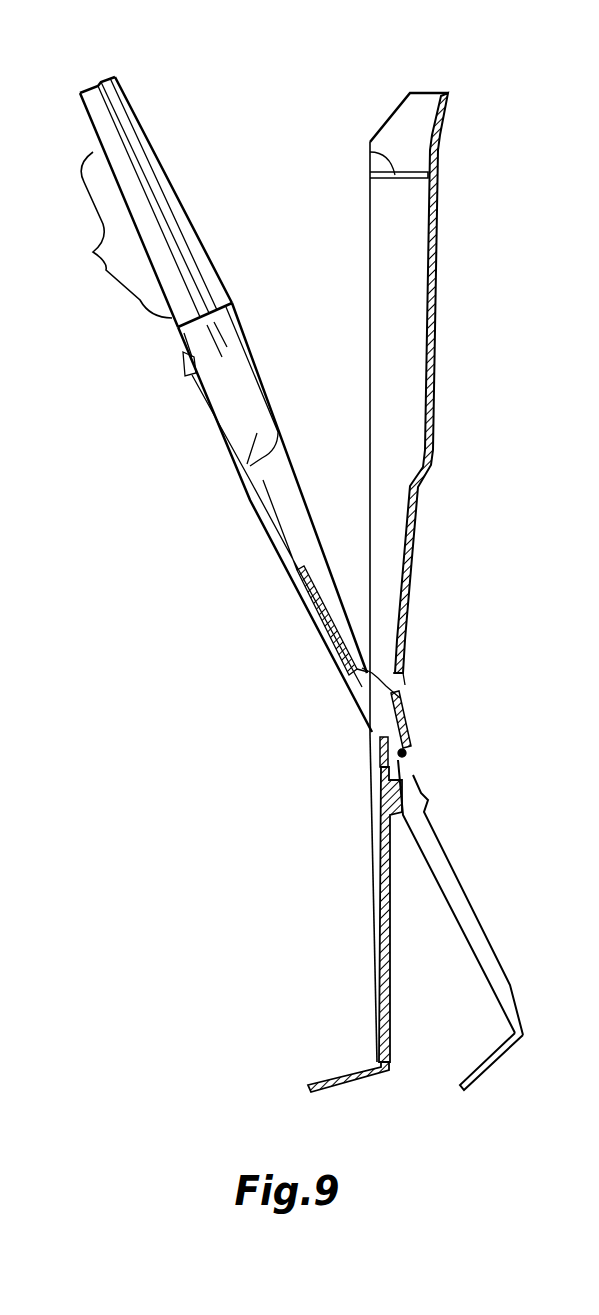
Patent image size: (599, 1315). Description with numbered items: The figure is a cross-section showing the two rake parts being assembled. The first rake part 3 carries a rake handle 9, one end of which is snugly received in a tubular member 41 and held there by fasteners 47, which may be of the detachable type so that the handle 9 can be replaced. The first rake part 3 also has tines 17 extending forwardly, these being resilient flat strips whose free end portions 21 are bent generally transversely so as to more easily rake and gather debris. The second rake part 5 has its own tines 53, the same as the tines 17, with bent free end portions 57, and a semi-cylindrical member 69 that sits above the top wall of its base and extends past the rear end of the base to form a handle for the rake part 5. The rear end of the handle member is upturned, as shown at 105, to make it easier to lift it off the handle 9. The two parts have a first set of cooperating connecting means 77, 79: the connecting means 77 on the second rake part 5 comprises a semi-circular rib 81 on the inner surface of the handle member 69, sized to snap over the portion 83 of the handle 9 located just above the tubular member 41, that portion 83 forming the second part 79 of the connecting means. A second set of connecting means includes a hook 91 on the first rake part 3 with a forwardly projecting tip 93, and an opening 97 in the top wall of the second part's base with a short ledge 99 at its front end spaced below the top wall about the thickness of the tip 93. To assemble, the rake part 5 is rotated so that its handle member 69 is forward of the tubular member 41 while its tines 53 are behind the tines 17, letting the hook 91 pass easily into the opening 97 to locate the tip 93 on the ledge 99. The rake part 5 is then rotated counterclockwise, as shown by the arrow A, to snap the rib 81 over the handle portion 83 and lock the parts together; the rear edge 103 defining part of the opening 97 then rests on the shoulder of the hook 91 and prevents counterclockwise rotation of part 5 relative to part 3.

The arrow A is at (420, 18).
The first rake part 3 is at (176, 449).
The second rake part 5 is at (478, 426).
The rake handle 9 is at (127, 110).
The tines 17 is at (482, 950).
The free end portions 21 is at (478, 1080).
The tubular member 41 is at (232, 408).
The fasteners 47 is at (193, 372).
The tines 53 is at (380, 1017).
The bent free end portions 57 is at (308, 1087).
The semi-cylindrical member 69 is at (440, 230).
The connecting means 77 is at (370, 152).
The second part of the cooperating connecting means 79 is at (167, 223).
The semi-circular rib 81 is at (372, 178).
The portion of the handle 83 is at (117, 235).
The hook 91 is at (420, 719).
The tip 93 is at (406, 753).
The opening 97 is at (420, 686).
The ledge 99 is at (380, 753).
The rear edge 103 is at (408, 678).
The upturned rear end 105 is at (450, 97).